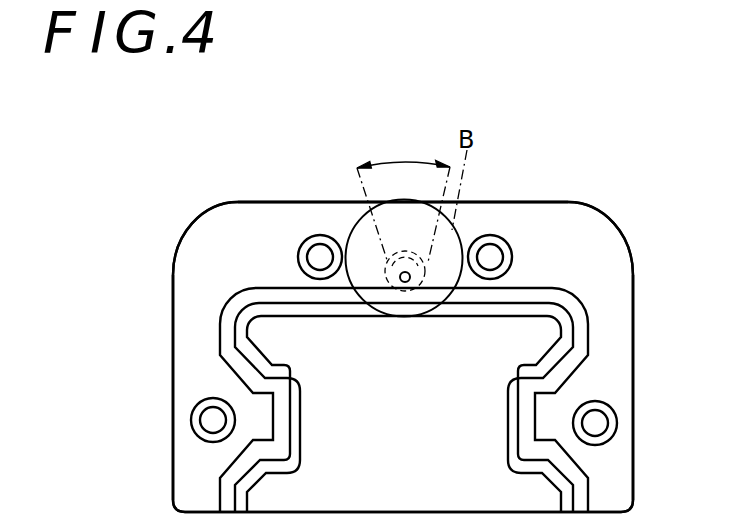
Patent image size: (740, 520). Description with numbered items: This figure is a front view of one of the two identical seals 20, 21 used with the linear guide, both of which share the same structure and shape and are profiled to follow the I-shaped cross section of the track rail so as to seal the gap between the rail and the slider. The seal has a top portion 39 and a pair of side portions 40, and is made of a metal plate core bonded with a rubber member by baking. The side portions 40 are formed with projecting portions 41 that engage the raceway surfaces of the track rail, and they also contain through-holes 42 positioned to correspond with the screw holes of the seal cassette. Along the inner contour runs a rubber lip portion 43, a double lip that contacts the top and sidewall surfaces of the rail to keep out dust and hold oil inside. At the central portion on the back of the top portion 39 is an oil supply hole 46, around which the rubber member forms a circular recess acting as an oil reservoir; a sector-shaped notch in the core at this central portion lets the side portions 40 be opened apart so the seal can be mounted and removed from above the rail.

The seal 20 is at (542, 201).
The seal 21 is at (403, 357).
The top portion 39 is at (270, 202).
The side portions 40 is at (172, 303).
The projecting portions 41 is at (262, 420).
The through-holes 42 is at (320, 235).
The lip portion 43 is at (347, 320).
The oil supply hole 46 is at (406, 282).